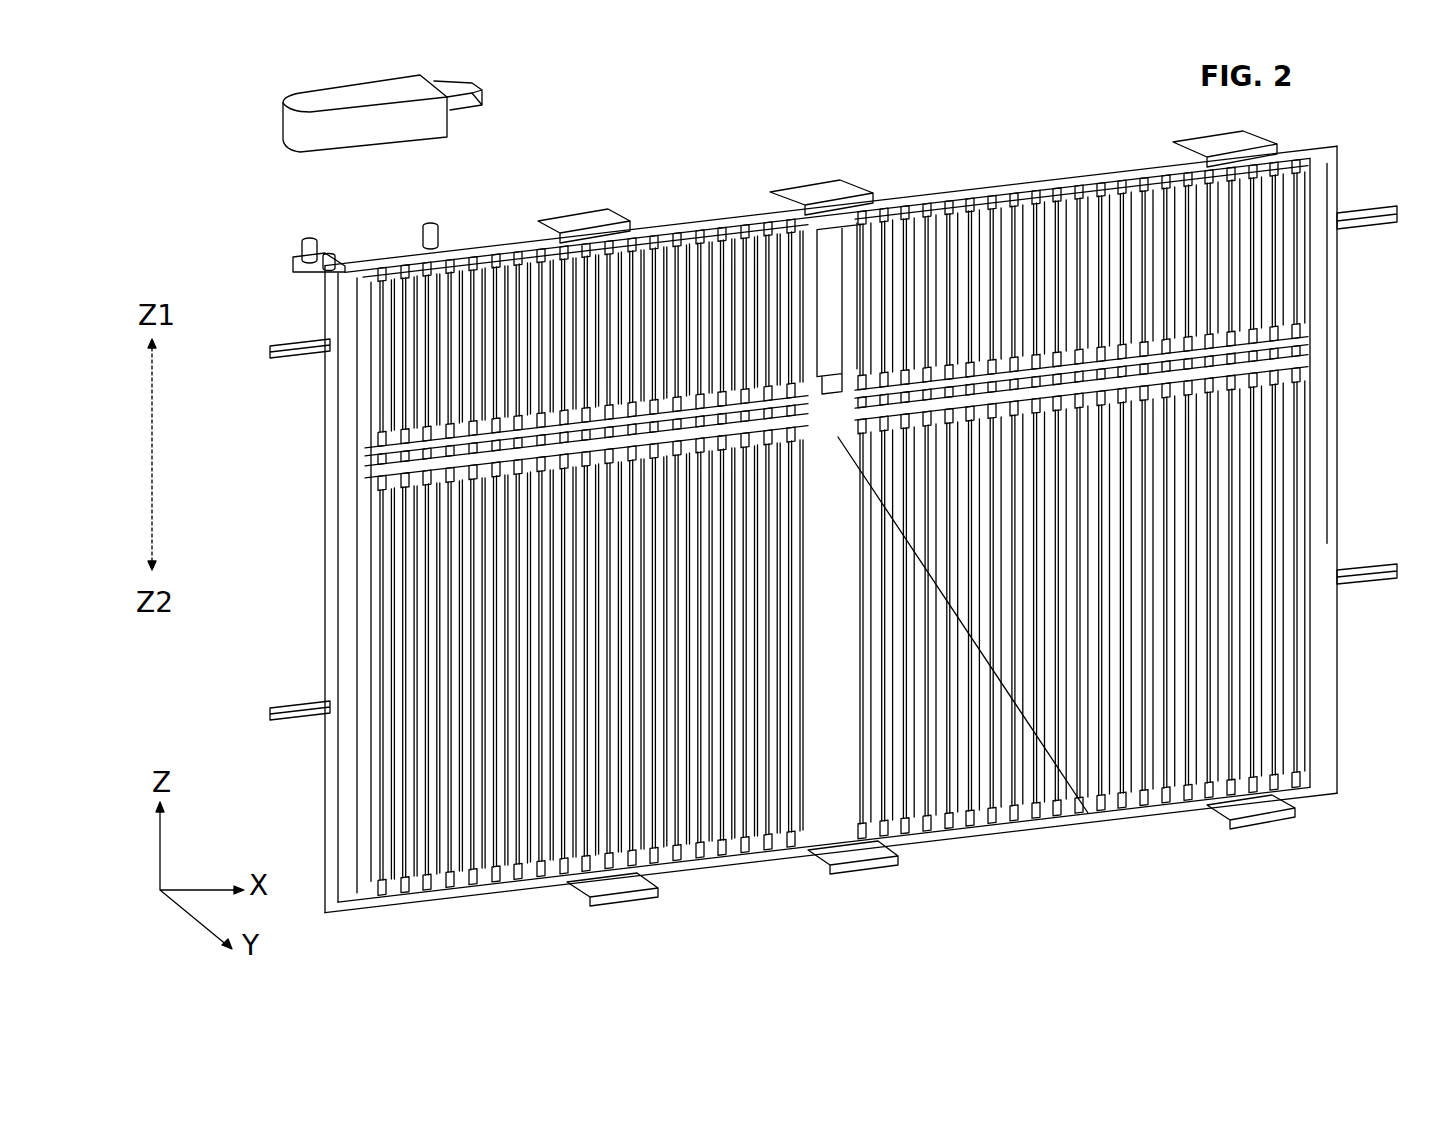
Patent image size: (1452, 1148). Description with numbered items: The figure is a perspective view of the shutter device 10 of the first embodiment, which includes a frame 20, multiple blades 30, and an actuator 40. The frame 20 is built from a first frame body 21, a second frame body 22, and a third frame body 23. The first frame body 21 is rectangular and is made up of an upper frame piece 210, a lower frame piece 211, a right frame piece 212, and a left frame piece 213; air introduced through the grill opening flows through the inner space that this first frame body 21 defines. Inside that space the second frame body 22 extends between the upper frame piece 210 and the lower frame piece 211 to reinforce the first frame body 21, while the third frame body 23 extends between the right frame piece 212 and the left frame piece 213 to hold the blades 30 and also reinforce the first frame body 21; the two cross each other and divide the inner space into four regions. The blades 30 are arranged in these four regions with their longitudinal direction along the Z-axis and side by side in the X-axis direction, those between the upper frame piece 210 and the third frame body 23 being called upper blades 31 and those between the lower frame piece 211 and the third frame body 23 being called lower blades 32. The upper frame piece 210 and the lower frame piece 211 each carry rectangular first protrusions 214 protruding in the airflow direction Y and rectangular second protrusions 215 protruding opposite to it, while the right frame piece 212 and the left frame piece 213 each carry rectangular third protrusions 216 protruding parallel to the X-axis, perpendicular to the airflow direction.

The shutter device 10 is at (207, 156).
The frame 20 is at (993, 168).
The first frame body 21 is at (652, 221).
The second frame body 22 is at (905, 823).
The third frame body 23 is at (1088, 813).
The blades 30 is at (215, 443).
The upper blades 31 is at (410, 390).
The lower blades 32 is at (400, 590).
The actuator 40 is at (332, 91).
The upper frame piece 210 is at (716, 202).
The lower frame piece 211 is at (738, 880).
The right frame piece 212 is at (1342, 448).
The left frame piece 213 is at (322, 648).
The first protrusions 214 is at (882, 240).
The second protrusions 215 is at (822, 185).
The third protrusions 216 is at (1366, 210).